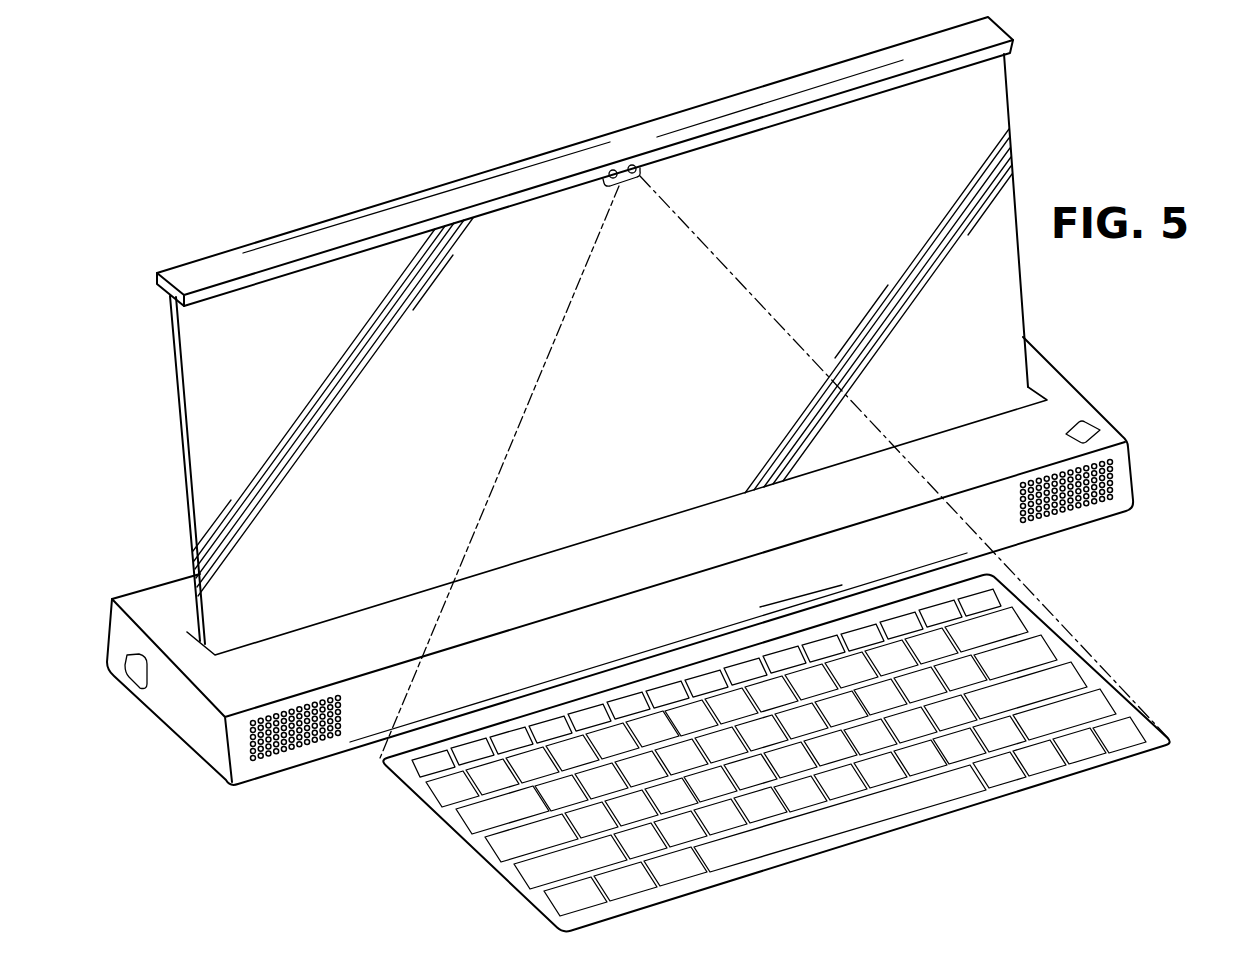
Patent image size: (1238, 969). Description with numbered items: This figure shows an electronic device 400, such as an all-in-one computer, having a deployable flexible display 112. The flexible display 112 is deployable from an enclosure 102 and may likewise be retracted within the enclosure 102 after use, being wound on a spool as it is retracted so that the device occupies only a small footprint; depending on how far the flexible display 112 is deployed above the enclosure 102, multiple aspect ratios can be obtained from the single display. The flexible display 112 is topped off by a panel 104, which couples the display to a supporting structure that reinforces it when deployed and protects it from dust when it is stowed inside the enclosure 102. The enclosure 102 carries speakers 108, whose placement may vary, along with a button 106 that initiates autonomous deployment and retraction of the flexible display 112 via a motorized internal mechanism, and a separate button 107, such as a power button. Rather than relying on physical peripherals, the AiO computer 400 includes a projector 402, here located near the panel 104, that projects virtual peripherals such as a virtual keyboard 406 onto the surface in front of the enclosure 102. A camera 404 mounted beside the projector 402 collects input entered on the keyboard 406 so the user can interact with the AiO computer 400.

The electronic device 400 is at (478, 143).
The panel 104 is at (304, 242).
The flexible display 112 is at (184, 472).
The camera 404 is at (613, 169).
The projector 402 is at (633, 164).
The enclosure 102 is at (156, 584).
The button 106 is at (1104, 428).
The button 107 is at (130, 683).
The speakers 108 is at (292, 758).
The virtual keyboard 406 is at (1024, 797).